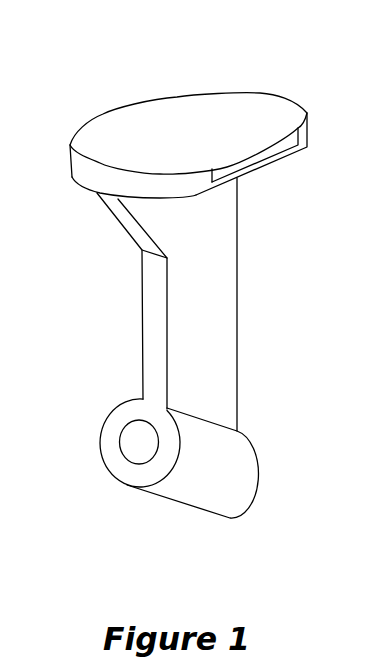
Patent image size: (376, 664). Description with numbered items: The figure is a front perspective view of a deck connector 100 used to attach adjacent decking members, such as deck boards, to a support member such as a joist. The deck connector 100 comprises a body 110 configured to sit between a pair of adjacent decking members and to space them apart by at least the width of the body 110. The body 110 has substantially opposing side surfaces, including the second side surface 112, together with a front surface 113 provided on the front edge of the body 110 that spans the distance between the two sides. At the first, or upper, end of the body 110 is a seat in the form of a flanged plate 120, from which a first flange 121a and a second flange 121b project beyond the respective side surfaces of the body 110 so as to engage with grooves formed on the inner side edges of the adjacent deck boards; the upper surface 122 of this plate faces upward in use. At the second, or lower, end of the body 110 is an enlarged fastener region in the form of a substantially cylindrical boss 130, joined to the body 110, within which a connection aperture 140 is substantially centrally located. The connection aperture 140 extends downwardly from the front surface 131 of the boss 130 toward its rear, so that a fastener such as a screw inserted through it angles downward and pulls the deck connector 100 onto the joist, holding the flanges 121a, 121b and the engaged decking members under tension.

The deck connector 100 is at (105, 61).
The body 110 is at (260, 243).
The second side surface 112 is at (227, 278).
The front surface 113 is at (155, 322).
The flanged plate 120 is at (284, 73).
The first flange 121a is at (97, 127).
The second flange 121b is at (267, 153).
The top surface of pad 122 is at (190, 103).
The boss 130 is at (164, 516).
The front surface of the boss 131 is at (127, 476).
The connection aperture 140 is at (140, 441).